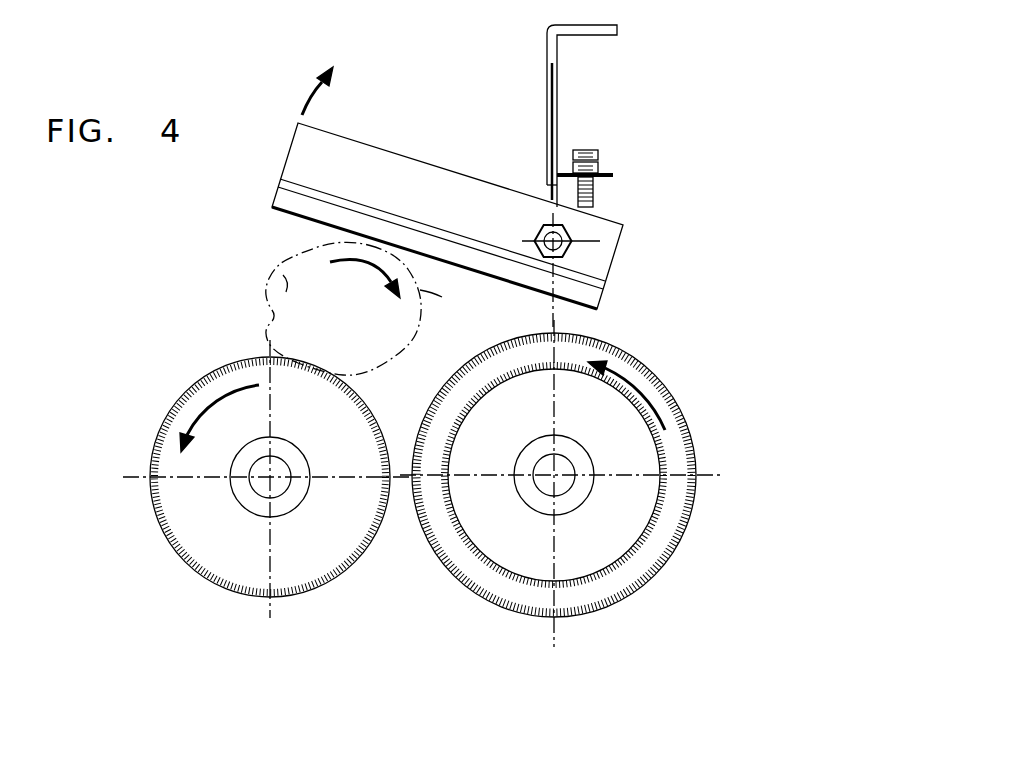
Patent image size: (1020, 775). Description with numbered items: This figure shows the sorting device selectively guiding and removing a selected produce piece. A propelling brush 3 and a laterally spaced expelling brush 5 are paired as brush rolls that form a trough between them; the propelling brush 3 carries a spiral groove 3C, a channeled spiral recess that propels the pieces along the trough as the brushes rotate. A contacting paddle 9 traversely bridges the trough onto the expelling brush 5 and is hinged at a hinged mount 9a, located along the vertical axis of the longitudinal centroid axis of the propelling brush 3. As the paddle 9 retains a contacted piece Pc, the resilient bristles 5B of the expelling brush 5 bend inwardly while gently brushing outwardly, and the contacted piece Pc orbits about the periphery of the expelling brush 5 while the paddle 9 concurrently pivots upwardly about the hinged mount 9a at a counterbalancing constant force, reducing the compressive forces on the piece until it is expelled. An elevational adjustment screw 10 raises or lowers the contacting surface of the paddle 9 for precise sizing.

The contacting paddle 9 is at (398, 162).
The elevational adjustment screw 10 is at (583, 148).
The hinged mount 9a is at (603, 249).
The contacted piece Pc is at (268, 270).
The expelling brush 5 is at (172, 547).
The resilient bristles 5B is at (173, 412).
The propelling brush 3 is at (622, 530).
The spiral groove 3C is at (682, 412).